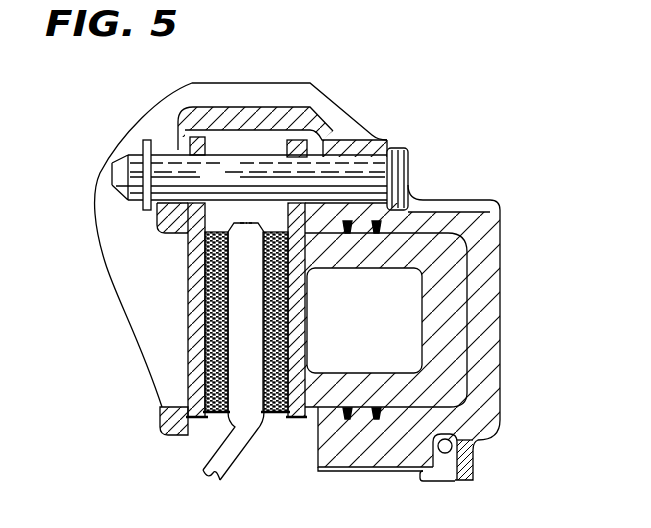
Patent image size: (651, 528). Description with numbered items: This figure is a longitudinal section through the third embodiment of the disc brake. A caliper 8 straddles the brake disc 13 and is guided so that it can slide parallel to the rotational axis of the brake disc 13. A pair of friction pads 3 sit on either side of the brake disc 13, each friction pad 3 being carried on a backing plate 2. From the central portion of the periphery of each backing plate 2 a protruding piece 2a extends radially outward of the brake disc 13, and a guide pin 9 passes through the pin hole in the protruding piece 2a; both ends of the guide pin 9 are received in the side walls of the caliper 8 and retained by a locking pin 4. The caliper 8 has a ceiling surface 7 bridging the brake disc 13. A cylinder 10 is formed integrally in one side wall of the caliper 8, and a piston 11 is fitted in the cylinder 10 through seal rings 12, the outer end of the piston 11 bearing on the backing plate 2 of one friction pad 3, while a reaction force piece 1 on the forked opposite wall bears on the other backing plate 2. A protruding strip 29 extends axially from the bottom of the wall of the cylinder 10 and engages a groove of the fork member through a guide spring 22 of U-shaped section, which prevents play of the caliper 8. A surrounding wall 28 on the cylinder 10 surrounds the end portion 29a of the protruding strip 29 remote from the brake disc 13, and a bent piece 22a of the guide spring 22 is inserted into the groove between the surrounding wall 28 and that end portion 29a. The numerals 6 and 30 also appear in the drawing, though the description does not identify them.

The reaction force piece 1 is at (160, 398).
The backing plate 2 is at (188, 355).
The protruding piece 2a is at (190, 146).
The friction pad 3 is at (208, 298).
The locking pin 4 is at (142, 147).
The arch member 6 is at (248, 110).
The ceiling surface 7 is at (271, 132).
The caliper 8 is at (186, 83).
The guide pin 9 is at (391, 148).
The cylinder 10 is at (467, 350).
The piston 11 is at (386, 260).
The seal ring 12 is at (377, 410).
The brake disc 13 is at (213, 440).
The guide spring 22 is at (342, 469).
The bent piece 22a is at (458, 451).
The surrounding wall 28 is at (470, 467).
The protruding strip 29 is at (397, 468).
The end portion of the protruding strip 29a is at (456, 481).
The pivot pin 30 is at (171, 236).